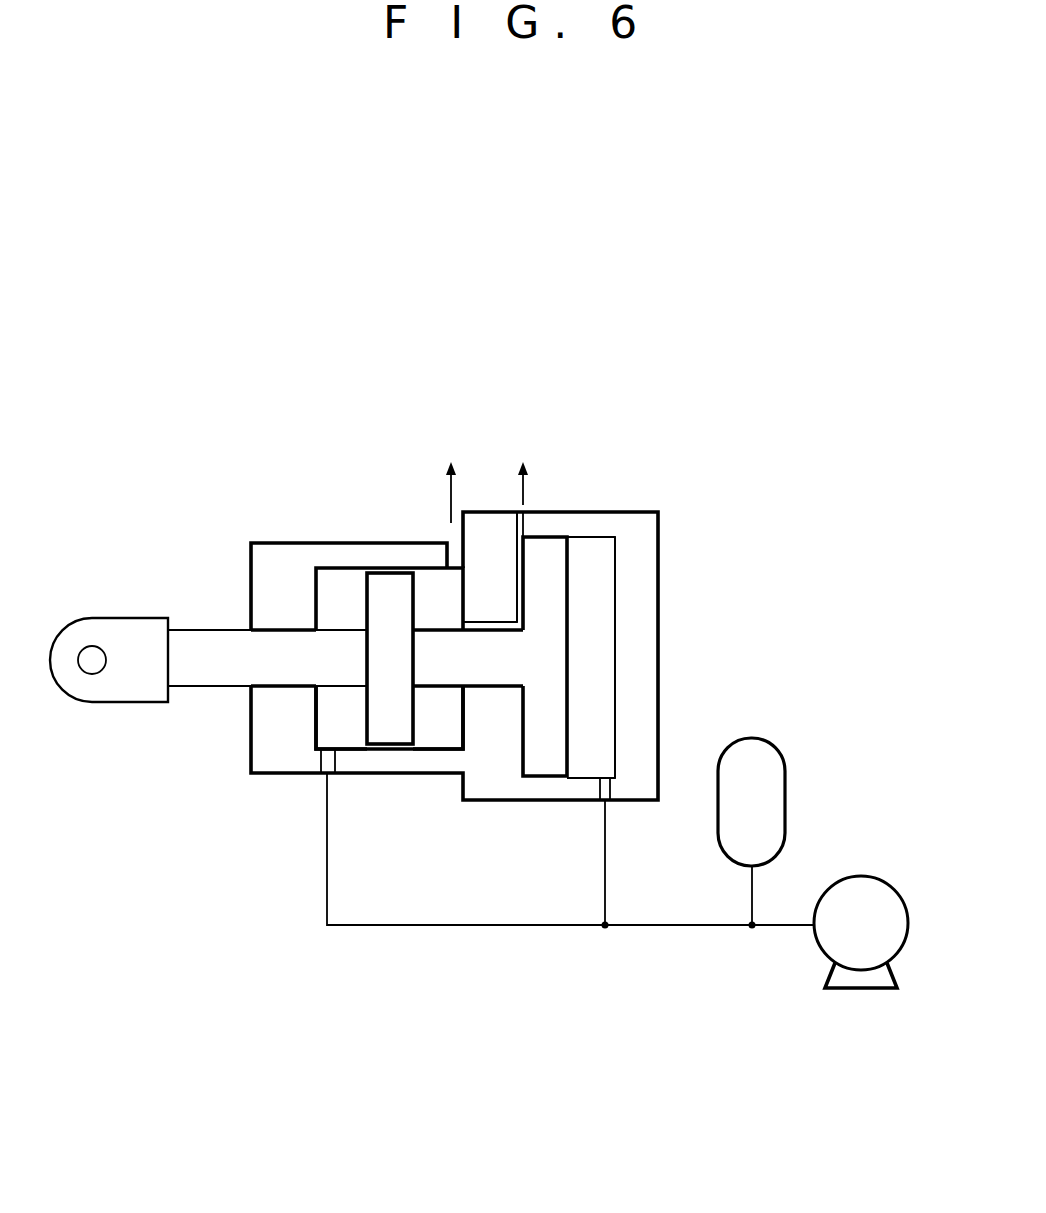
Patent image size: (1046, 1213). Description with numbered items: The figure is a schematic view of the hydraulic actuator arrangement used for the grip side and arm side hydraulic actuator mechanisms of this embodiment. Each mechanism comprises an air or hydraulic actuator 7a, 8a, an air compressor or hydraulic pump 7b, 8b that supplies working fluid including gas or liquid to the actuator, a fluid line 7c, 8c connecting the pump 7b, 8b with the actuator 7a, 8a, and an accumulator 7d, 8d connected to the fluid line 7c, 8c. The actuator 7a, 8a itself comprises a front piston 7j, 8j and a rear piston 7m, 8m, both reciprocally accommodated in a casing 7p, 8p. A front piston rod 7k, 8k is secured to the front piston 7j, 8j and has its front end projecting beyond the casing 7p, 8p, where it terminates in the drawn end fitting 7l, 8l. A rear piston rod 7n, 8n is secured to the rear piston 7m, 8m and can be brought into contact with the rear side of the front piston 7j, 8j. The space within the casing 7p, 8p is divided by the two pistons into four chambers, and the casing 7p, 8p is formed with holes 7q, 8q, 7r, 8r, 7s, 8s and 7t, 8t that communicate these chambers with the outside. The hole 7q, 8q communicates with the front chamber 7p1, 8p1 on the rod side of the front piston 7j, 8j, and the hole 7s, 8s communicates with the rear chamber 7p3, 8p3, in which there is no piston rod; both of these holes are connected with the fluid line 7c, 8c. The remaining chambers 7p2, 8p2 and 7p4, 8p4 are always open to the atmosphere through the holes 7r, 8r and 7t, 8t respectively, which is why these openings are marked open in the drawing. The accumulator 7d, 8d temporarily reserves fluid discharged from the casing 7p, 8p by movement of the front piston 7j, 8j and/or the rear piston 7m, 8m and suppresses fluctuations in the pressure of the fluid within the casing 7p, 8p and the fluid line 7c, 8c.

The air or hydraulic actuator 7a is at (437, 645).
The air or hydraulic actuator 8a is at (344, 522).
The air compressor or hydraulic pump 7b is at (830, 961).
The air compressor or hydraulic pump 8b is at (830, 945).
The fluid line 7c is at (570, 882).
The fluid line 8c is at (437, 927).
The accumulator 7d is at (790, 785).
The accumulator 8d is at (782, 763).
The front piston 7j is at (403, 612).
The front piston 8j is at (390, 590).
The front piston rod 7k is at (260, 691).
The front piston rod 8k is at (232, 672).
The connecting end (clevis) 7l is at (109, 636).
The connecting end (clevis) 8l is at (103, 628).
The rear piston 7m is at (600, 624).
The rear piston 8m is at (550, 552).
The rear piston rod 7n is at (475, 741).
The rear piston rod 8n is at (492, 670).
The casing 7p is at (406, 648).
The casing 8p is at (253, 557).
The front chamber 7p1 is at (261, 756).
The front chamber 8p1 is at (320, 717).
The chamber 7p2 is at (402, 788).
The chamber 8p2 is at (433, 730).
The rear chamber 7p3 is at (709, 657).
The rear chamber 8p3 is at (607, 587).
The chamber 7p4 is at (671, 562).
The chamber 8p4 is at (522, 583).
The hole 7q is at (267, 803).
The hole 8q is at (327, 760).
The hole 7r is at (502, 484).
The hole 8r is at (457, 555).
The hole 7s is at (650, 824).
The hole 8s is at (610, 785).
The hole 7t is at (605, 481).
The hole 8t is at (522, 510).